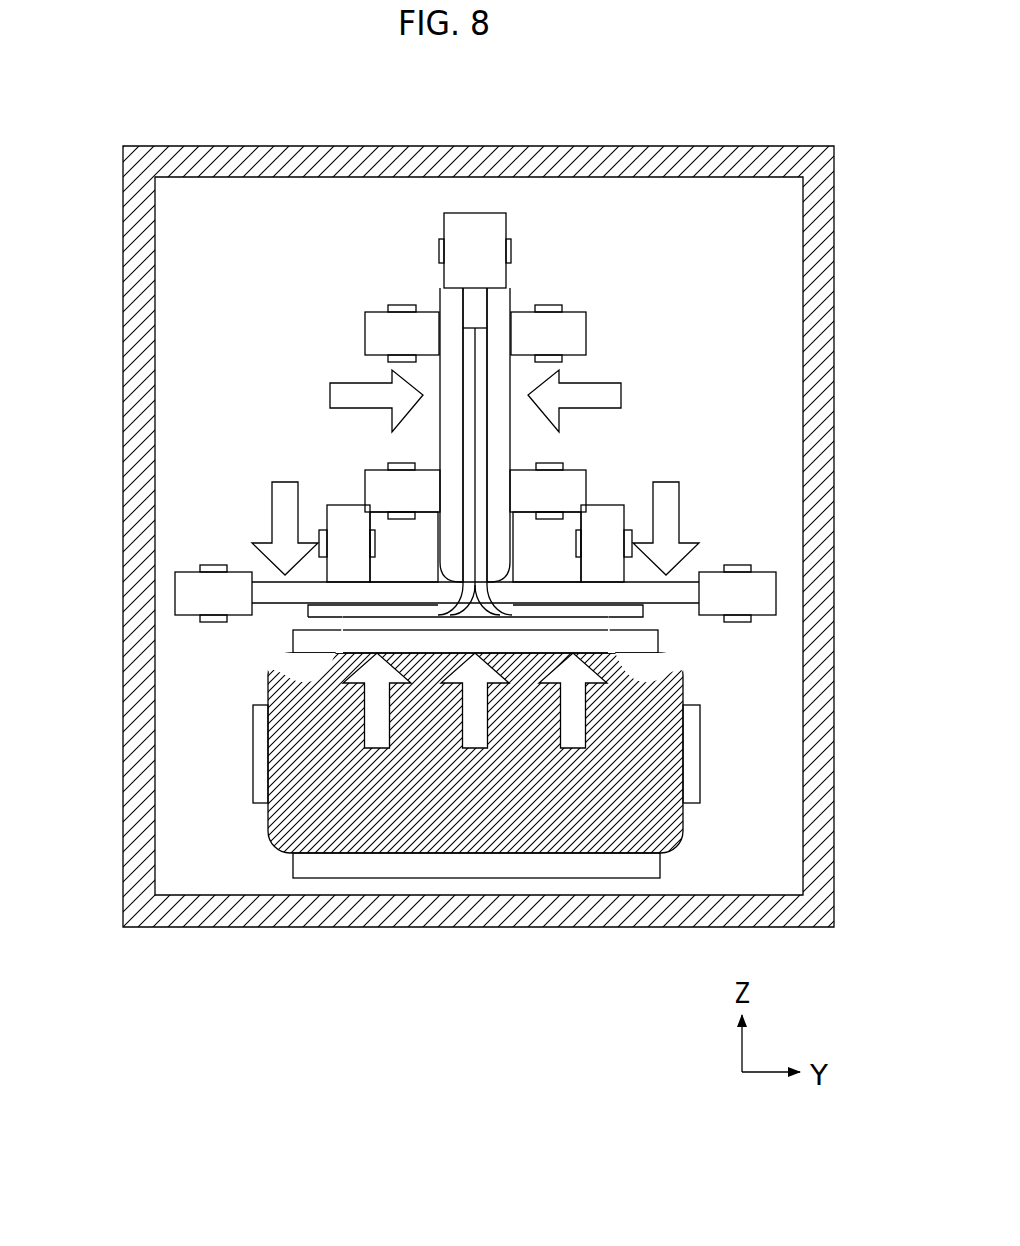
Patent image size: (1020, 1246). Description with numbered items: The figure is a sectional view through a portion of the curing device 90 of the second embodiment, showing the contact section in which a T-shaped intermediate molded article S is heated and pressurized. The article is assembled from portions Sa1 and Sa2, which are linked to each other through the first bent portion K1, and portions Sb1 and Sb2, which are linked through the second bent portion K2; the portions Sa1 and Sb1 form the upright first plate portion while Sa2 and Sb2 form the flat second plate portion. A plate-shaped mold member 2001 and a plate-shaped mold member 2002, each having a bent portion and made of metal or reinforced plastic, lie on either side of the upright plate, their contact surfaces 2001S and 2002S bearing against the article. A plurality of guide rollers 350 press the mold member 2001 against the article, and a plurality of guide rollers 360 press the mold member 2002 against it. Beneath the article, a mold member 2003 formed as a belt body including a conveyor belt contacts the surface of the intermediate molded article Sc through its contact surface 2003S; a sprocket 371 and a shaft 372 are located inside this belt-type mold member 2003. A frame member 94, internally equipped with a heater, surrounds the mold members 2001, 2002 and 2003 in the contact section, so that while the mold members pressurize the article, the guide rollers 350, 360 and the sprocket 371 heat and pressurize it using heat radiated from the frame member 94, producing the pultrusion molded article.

The curing device 90 is at (762, 132).
The frame member 94 is at (834, 256).
The guide roller 360 is at (366, 330).
The guide roller 350 is at (587, 330).
The mold member 2002 is at (440, 455).
The mold member 2001 is at (510, 460).
The contact surface 2002S is at (463, 383).
The contact surface 2001S is at (487, 428).
The intermediate molded article S is at (490, 345).
The portion Sb1 is at (463, 420).
The portion Sa1 is at (510, 488).
The second bent portion K2 is at (450, 593).
The first bent portion K1 is at (500, 593).
The intermediate molded article Sc is at (308, 620).
The portion Sb2 is at (343, 610).
The portion Sa2 is at (608, 610).
The mold member 2003 is at (658, 640).
The contact surface 2003S is at (543, 615).
The shaft 372 is at (700, 750).
The sprocket 371 is at (683, 820).